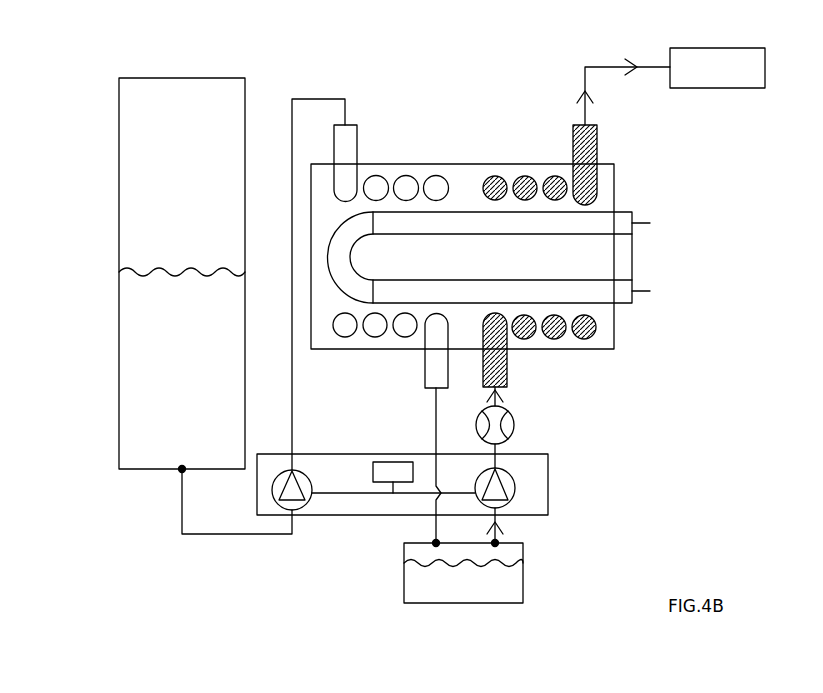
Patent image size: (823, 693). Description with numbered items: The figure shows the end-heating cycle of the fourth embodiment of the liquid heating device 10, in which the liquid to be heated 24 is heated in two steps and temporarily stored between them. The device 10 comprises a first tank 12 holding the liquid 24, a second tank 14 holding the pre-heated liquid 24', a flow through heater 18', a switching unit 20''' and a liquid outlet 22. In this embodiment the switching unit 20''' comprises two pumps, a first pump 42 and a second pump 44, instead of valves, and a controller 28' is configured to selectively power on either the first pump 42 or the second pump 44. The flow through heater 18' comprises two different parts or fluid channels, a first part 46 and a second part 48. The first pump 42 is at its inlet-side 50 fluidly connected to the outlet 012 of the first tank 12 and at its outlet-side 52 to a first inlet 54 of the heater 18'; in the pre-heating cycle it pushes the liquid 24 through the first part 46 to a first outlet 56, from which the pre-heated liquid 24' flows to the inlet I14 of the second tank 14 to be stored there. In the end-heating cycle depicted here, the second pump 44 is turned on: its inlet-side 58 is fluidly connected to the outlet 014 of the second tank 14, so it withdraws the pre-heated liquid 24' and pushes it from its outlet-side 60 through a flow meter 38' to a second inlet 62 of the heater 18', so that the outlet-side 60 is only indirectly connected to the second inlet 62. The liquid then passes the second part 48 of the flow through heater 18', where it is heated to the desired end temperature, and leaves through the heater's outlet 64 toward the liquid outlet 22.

The liquid heating device 10 is at (80, 39).
The first tank 12 is at (119, 382).
The second tank 14 is at (523, 553).
The flow through heater 18' is at (493, 260).
The switching unit 20''' is at (437, 481).
The liquid outlet 22 is at (710, 50).
The liquid to be heated 24 is at (159, 285).
The pre-heated liquid 24' is at (491, 579).
The controller 28' is at (391, 450).
The flow meter 38' is at (520, 432).
The first pump 42 is at (293, 492).
The second pump 44 is at (508, 487).
The first part of the flow through heater 46 is at (436, 177).
The second part of the flow through heater 48 is at (493, 177).
The inlet-side of the first pump 50 is at (296, 510).
The outlet-side of the first pump 52 is at (292, 472).
The first inlet of the flow through heater 54 is at (343, 152).
The first outlet of the flow through heater 56 is at (433, 360).
The inlet-side of the second pump 58 is at (497, 508).
The outlet-side of the second pump 60 is at (500, 470).
The second inlet of the flow through heater 62 is at (507, 356).
The fourth manifold 64 is at (590, 148).
The outlet of the first tank 012 is at (201, 482).
The outlet of the second tank 014 is at (516, 535).
The inlet of the second tank I14 is at (417, 535).